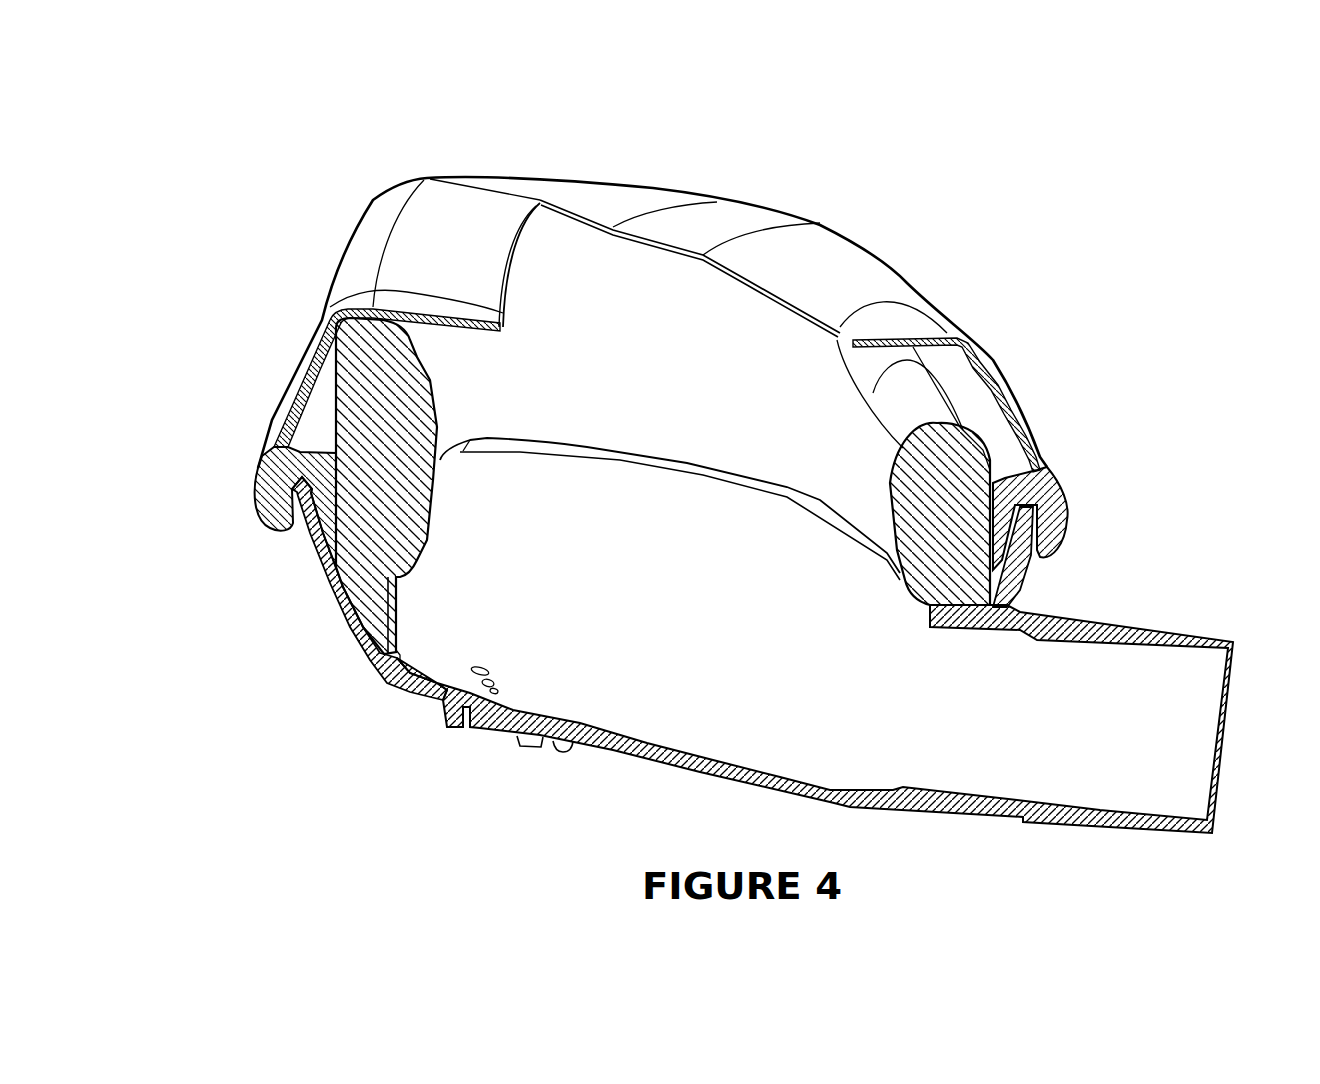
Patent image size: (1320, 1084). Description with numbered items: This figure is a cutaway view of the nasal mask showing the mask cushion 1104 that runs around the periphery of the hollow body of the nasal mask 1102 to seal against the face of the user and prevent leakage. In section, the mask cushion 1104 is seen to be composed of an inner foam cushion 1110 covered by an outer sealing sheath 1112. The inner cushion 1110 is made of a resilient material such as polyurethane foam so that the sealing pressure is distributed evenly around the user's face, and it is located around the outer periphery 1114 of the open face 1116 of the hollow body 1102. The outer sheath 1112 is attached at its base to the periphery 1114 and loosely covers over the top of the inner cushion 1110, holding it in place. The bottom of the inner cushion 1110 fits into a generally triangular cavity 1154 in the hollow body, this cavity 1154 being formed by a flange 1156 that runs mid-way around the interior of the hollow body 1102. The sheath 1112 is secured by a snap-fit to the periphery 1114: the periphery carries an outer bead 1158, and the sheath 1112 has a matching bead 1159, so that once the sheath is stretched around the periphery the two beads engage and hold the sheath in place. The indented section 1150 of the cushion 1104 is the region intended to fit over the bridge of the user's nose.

The nasal mask 1102 is at (790, 717).
The mask cushion 1104 is at (975, 280).
The inner foam cushion 1110 is at (357, 429).
The outer sealing sheath 1112 is at (298, 366).
The outer periphery 1114 is at (1037, 563).
The open face 1116 is at (650, 355).
The indented section 1150 is at (817, 277).
The generally triangular cavity 1154 is at (344, 624).
The flange 1156 is at (382, 590).
The outer bead 1158 is at (262, 462).
The matching bead 1159 is at (1070, 530).